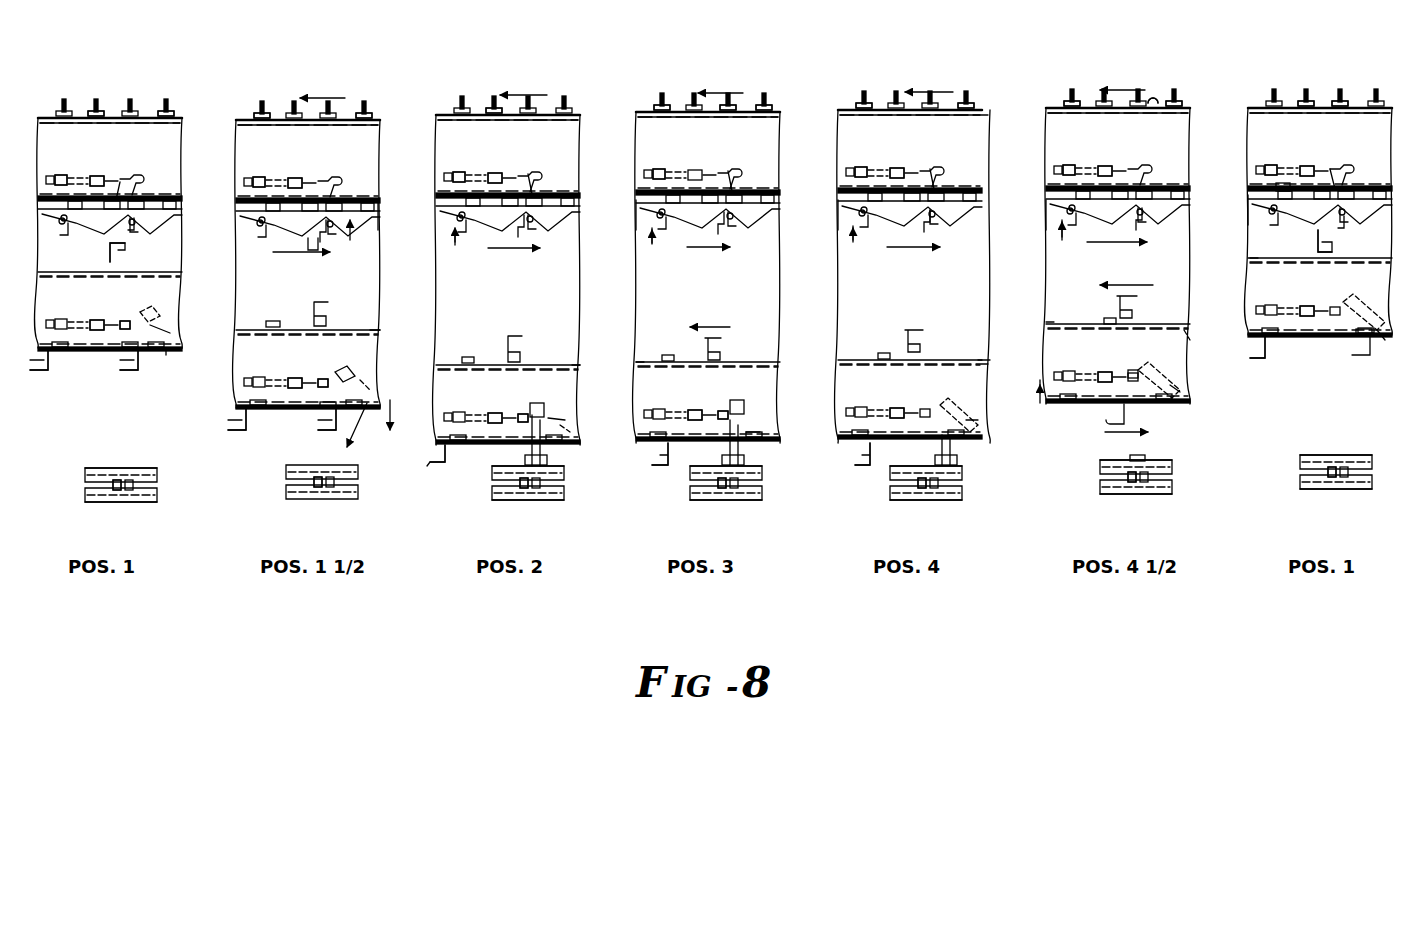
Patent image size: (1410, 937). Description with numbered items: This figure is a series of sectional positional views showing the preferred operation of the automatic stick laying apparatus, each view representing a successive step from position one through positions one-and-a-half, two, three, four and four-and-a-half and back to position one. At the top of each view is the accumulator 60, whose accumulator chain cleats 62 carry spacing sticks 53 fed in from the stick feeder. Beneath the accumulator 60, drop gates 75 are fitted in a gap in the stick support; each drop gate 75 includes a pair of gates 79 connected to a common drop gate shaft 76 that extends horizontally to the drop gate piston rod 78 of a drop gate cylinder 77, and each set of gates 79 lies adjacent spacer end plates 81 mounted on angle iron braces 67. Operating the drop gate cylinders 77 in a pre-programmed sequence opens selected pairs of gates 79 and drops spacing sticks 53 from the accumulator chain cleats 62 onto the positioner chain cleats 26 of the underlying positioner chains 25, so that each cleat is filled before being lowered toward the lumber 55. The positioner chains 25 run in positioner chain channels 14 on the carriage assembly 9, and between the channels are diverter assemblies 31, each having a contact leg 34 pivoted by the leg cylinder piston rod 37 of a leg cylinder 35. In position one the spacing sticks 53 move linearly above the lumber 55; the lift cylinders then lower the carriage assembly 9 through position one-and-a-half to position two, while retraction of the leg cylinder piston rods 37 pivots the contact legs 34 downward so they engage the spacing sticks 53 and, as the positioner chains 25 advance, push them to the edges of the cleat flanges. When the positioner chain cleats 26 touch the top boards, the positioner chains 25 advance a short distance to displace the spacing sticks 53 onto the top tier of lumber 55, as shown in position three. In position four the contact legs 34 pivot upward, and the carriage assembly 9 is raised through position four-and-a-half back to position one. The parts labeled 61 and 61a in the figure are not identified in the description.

The carriage assembly 9 is at (182, 352).
The positioner chain channels 14 is at (75, 301).
The positioner chains 25 is at (168, 360).
The positioner chain cleats 26 is at (133, 368).
The diverter assemblies 31 is at (162, 314).
The contact leg 34 is at (172, 333).
The leg cylinder 35 is at (90, 320).
The leg cylinder piston rod 37 is at (126, 321).
The spacing sticks 53 is at (150, 112).
The lumber 55 is at (290, 468).
The accumulator 60 is at (652, 72).
The upper conveyor 61 is at (355, 112).
The upper conveyor section 61a is at (168, 151).
The accumulator chain cleats 62 is at (172, 110).
The angle iron braces 67 is at (60, 226).
The drop gates 75 is at (126, 246).
The drop gate shaft 76 is at (379, 212).
The drop gate cylinder 77 is at (70, 178).
The drop gate piston rod 78 is at (118, 178).
The gates 79 is at (122, 202).
The spacer end plates 81 is at (352, 222).